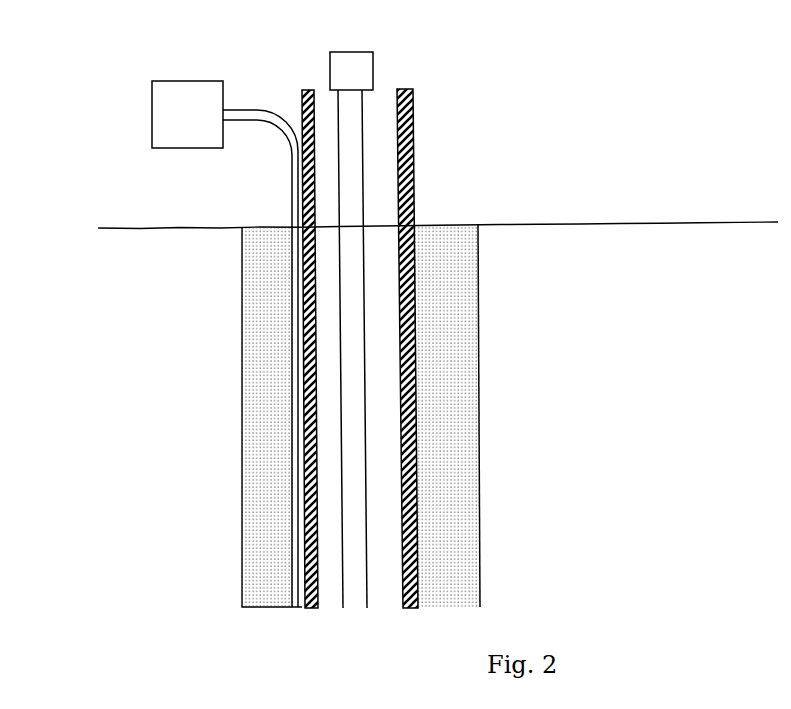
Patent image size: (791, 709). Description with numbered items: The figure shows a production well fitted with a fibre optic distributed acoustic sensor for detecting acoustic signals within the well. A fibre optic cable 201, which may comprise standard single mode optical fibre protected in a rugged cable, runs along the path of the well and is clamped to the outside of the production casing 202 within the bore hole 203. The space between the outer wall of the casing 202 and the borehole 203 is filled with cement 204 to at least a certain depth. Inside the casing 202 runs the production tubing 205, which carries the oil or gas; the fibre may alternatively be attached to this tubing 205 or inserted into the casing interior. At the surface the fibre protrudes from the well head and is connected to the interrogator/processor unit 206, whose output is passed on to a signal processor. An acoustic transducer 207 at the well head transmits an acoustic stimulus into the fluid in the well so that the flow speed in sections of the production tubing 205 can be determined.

The fibre optic cable 201 is at (296, 391).
The production casing 202 is at (415, 342).
The bore hole 203 is at (480, 400).
The cement 204 is at (458, 487).
The production tubing 205 is at (362, 197).
The interrogator/processor unit 206 is at (172, 112).
The acoustic transducer 207 is at (374, 66).